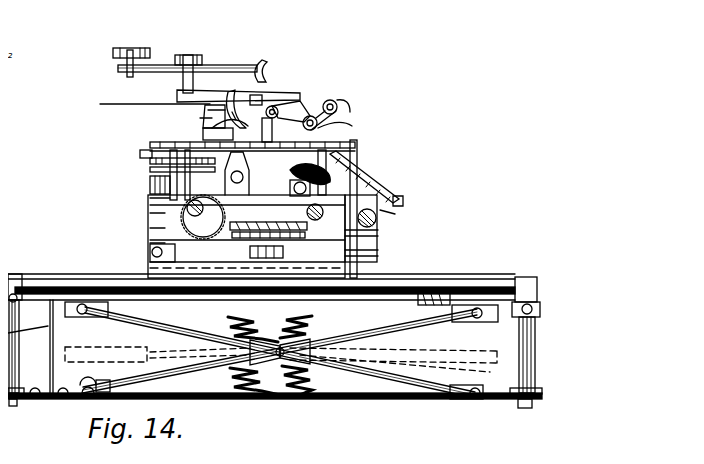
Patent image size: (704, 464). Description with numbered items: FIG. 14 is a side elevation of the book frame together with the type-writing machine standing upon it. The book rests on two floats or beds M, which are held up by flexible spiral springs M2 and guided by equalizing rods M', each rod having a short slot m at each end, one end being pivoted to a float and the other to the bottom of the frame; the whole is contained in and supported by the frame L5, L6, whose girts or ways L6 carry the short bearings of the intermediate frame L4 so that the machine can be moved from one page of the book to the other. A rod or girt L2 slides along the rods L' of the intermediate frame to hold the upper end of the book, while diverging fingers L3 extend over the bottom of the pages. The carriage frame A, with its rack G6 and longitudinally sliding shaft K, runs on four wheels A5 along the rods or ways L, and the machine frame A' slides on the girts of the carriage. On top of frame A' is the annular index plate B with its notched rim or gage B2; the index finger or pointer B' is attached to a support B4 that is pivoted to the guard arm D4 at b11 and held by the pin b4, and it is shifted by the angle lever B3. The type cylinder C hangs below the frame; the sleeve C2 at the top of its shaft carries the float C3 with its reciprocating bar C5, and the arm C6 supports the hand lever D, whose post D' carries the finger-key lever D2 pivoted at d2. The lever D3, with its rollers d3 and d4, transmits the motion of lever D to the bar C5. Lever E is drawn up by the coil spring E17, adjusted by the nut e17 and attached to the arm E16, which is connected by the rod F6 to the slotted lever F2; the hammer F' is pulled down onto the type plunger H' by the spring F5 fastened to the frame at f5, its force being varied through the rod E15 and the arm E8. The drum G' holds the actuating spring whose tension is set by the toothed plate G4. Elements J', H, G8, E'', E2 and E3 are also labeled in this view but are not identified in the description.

The rods or ways L is at (261, 275).
The rods of the intermediate frame L' is at (265, 274).
The rod or girt L2 is at (472, 292).
The diverging fingers L3 is at (52, 300).
The intermediate frame L4 is at (538, 289).
The frame L5 is at (537, 362).
The girts or ways L6 is at (541, 308).
The slide block J' is at (434, 279).
The equalizing rods M' is at (274, 350).
The floats or beds M is at (289, 349).
The flexible spiral springs M2 is at (285, 395).
The short slot m is at (93, 316).
The type cylinder C is at (246, 236).
The sleeve C2 is at (150, 190).
The float C3 is at (337, 102).
The reciprocating bar C5 is at (340, 117).
The arm C6 is at (336, 108).
The shaft bearing H is at (374, 221).
The type plunger H' is at (328, 172).
The longitudinally sliding shaft K is at (322, 212).
The carriage frame A is at (303, 221).
The machine frame A' is at (324, 224).
The wheels A5 is at (378, 260).
The drum G' is at (393, 223).
The bar G8 is at (405, 212).
The rack G6 is at (405, 235).
The plate G4 is at (405, 206).
The spring attachment point f5 is at (393, 212).
The spiral spring F5 is at (390, 203).
The hammer F' is at (343, 174).
The slotted lever F2 is at (345, 168).
The rod F6 is at (362, 152).
The index plate B is at (264, 137).
The rim or gage B2 is at (325, 145).
The index finger B' is at (155, 122).
The angle lever B3 is at (205, 113).
The support B4 is at (200, 115).
The lever E is at (143, 188).
The bearing block E'' is at (143, 174).
The coil spring E17 is at (160, 170).
The nut e17 is at (150, 152).
The bar E2 is at (150, 198).
The rod E15 is at (150, 215).
The bar E3 is at (150, 228).
The arm E8 is at (150, 243).
The arm E16 is at (256, 66).
The hand lever D is at (208, 79).
The lever D2 is at (170, 70).
The post D' is at (220, 82).
The lever D3 is at (304, 99).
The arm D4 is at (210, 120).
The roller d4 is at (274, 106).
The antifriction roller d3 is at (310, 116).
The pivot d2 is at (256, 96).
The pivot b11 is at (275, 95).
The pin b4 is at (243, 116).